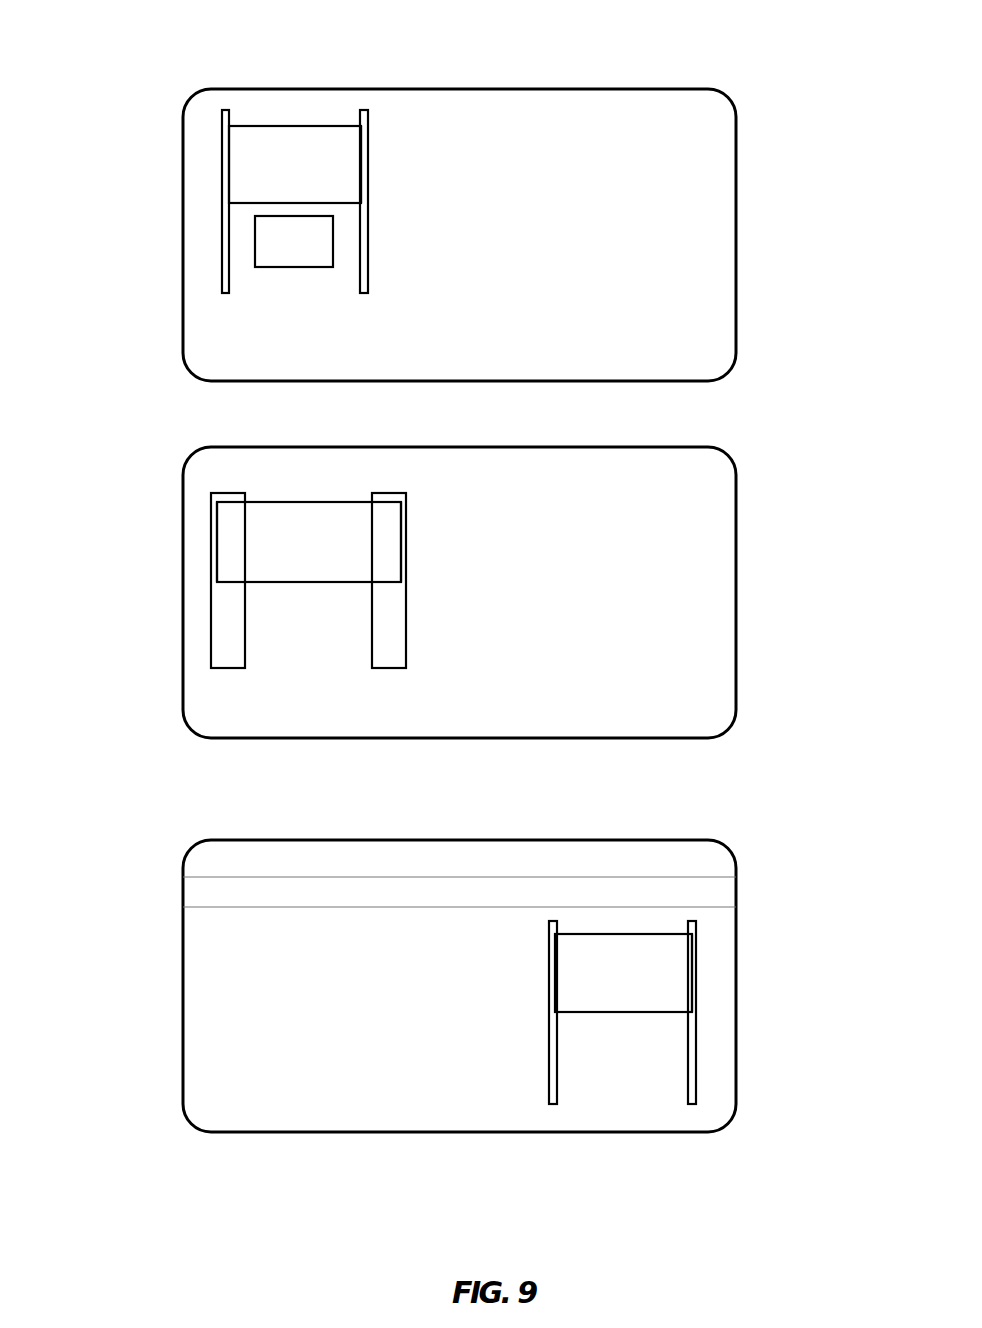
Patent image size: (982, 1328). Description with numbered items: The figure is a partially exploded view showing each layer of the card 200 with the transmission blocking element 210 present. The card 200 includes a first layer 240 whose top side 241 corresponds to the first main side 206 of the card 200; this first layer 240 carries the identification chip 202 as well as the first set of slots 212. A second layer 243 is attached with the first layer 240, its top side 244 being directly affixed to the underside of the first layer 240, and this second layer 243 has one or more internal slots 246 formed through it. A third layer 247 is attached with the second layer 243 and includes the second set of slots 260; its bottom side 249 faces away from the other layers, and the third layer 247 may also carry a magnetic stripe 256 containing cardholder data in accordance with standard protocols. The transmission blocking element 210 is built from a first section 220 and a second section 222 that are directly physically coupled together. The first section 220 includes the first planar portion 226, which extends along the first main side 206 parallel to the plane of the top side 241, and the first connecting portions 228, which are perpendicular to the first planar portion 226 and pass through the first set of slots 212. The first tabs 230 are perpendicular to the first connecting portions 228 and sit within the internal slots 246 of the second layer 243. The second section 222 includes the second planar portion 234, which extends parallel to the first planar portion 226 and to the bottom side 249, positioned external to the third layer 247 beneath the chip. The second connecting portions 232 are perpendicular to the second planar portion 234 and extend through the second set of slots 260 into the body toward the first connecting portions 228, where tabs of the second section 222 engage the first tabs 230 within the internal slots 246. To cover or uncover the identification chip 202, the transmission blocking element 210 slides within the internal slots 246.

The card 200 is at (81, 98).
The identification chip 202 is at (289, 253).
The first main side 206 is at (585, 104).
The transmission blocking element 210 is at (286, 117).
The first set of slots 212 is at (367, 123).
The first section 220 is at (336, 135).
The second section 222 is at (661, 935).
The first planar portion 226 is at (259, 133).
The first connecting portions 228 is at (224, 173).
The first tabs 230 is at (230, 561).
The second connecting portions 232 is at (692, 989).
The second planar portion 234 is at (582, 952).
The first layer 240 is at (710, 153).
The top side 241 is at (580, 194).
The second layer 243 is at (688, 488).
The top side 244 is at (605, 562).
The internal slots 246 is at (375, 617).
The third layer 247 is at (200, 1037).
The bottom side 249 is at (318, 1004).
The magnetic stripe 256 is at (200, 888).
The second set of slots 260 is at (550, 1073).